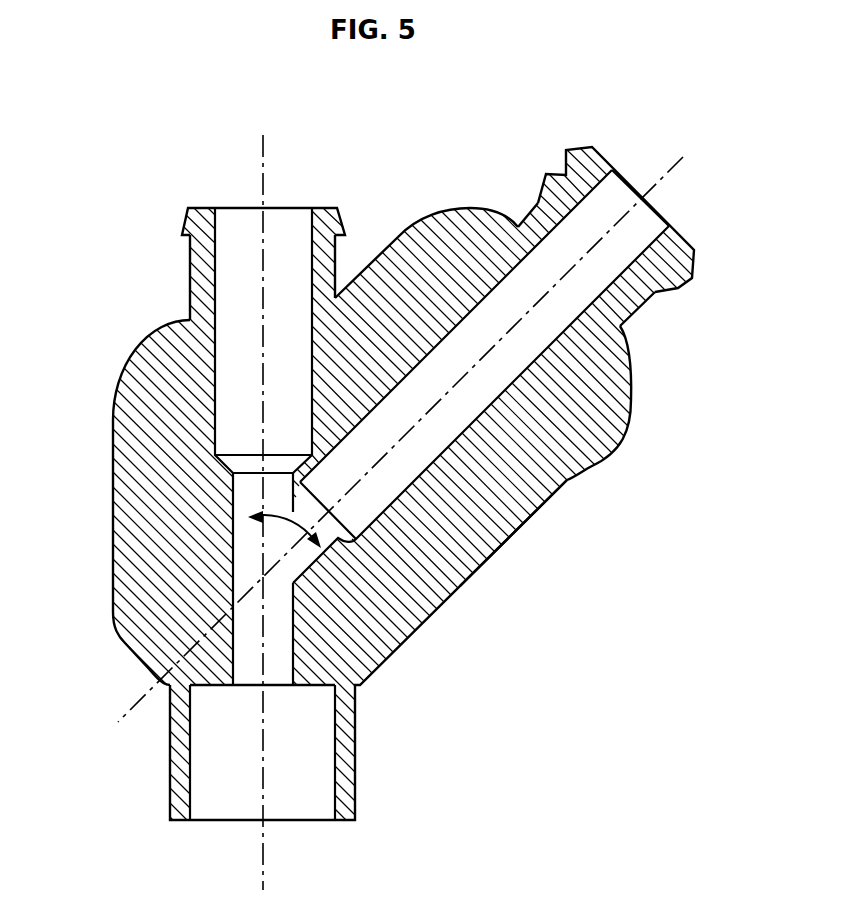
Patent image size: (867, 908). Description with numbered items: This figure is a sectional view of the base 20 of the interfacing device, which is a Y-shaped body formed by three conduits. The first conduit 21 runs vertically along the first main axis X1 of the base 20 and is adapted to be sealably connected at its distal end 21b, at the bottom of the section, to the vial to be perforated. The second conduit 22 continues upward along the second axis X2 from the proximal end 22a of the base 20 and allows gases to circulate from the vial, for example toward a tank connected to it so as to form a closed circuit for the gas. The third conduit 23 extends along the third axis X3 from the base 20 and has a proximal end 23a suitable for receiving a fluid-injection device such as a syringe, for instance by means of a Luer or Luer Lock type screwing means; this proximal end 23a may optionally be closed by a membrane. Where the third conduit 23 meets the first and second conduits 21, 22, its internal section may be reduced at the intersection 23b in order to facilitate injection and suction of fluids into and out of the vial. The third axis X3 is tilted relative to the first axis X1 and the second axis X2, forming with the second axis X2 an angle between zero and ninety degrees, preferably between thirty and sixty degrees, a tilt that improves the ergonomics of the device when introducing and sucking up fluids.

The base 20 is at (588, 596).
The first conduit 21 is at (248, 565).
The distal end 21b is at (180, 772).
The second conduit 22 is at (240, 340).
The proximal end 22a is at (190, 222).
The third conduit 23 is at (567, 470).
The proximal end 23a is at (668, 285).
The intersection 23b is at (439, 650).
The first main axis X1 is at (263, 873).
The second axis X2 is at (263, 153).
The third axis X3 is at (683, 157).